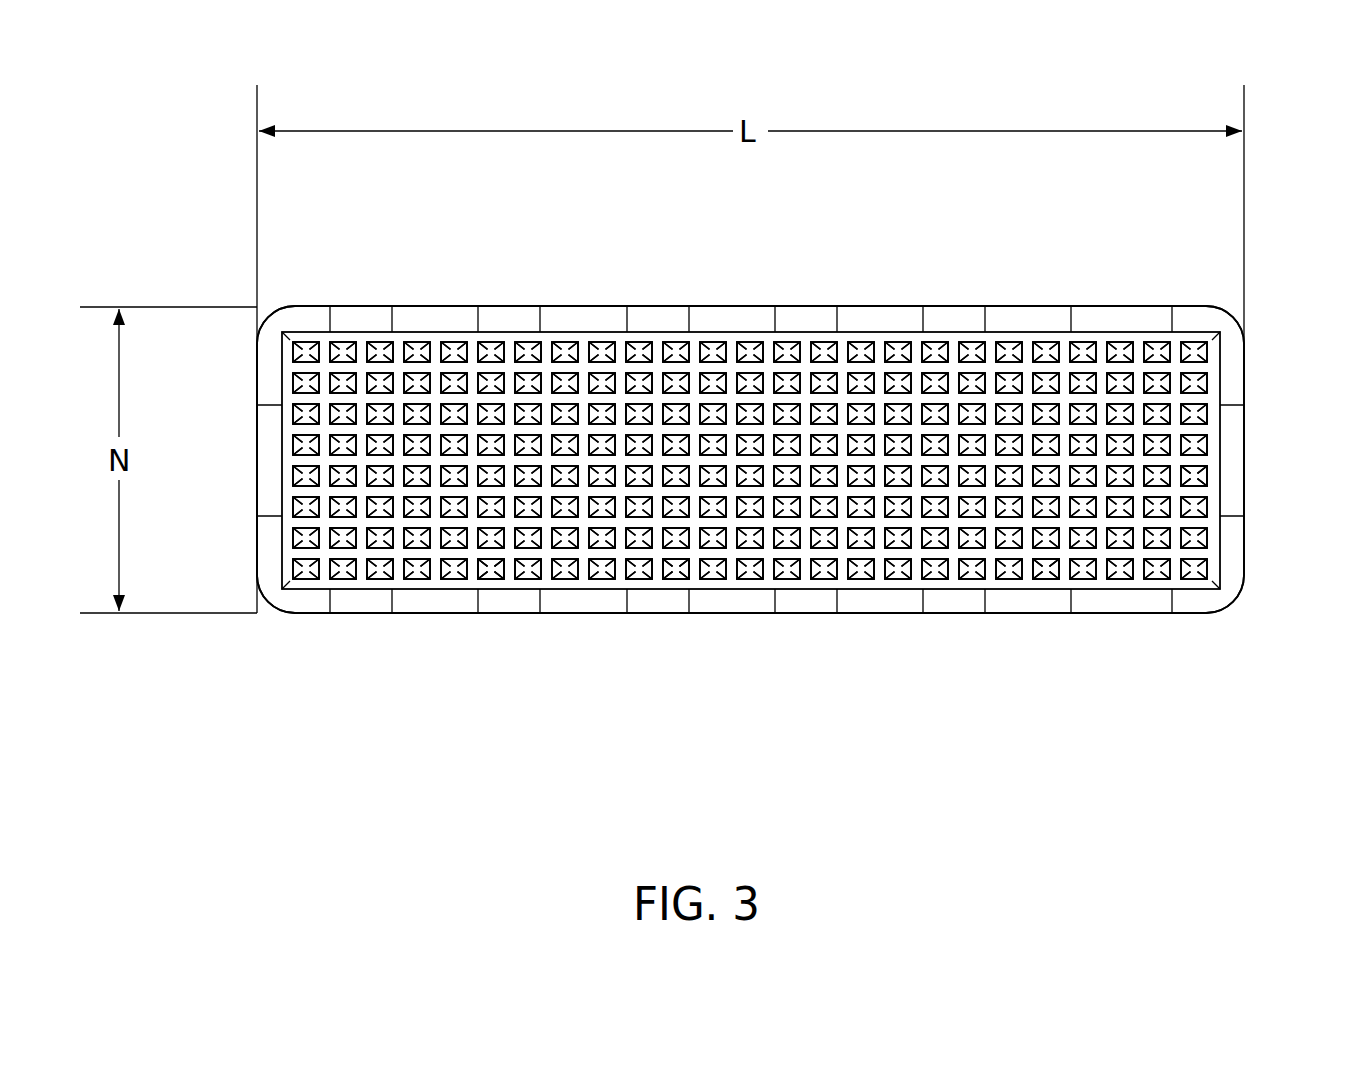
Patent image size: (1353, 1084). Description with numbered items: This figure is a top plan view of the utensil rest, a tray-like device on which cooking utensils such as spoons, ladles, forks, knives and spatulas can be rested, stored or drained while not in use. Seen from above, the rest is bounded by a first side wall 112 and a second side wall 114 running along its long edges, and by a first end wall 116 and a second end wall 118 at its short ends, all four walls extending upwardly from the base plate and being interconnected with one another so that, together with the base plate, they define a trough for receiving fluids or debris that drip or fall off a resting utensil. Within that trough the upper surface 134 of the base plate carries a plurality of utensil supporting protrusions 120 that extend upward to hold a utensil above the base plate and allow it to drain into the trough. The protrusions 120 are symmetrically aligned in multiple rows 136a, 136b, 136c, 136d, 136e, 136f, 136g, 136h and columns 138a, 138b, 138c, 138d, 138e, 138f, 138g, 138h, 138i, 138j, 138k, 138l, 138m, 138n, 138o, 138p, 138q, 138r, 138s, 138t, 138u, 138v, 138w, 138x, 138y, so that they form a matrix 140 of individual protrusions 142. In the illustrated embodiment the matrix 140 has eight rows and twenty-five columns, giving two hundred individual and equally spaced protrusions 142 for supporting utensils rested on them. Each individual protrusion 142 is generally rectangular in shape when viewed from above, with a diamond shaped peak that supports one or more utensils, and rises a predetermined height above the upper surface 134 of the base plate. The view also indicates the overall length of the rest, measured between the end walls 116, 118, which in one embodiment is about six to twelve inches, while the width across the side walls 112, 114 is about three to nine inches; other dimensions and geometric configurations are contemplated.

The first side wall 112 is at (583, 617).
The second side wall 114 is at (573, 303).
The first end wall 116 is at (250, 511).
The second end wall 118 is at (1248, 542).
The utensil supporting protrusions 120 is at (505, 572).
The upper surface 134 is at (881, 582).
The row 136a is at (275, 569).
The row 136b is at (275, 538).
The row 136c is at (275, 507).
The row 136d is at (275, 476).
The row 136e is at (275, 445).
The row 136f is at (275, 414).
The row 136g is at (275, 383).
The row 136h is at (275, 352).
The column 138a is at (306, 330).
The column 138b is at (343, 330).
The column 138c is at (380, 330).
The column 138d is at (417, 330).
The column 138e is at (454, 330).
The column 138f is at (491, 330).
The column 138g is at (528, 330).
The column 138h is at (565, 330).
The column 138i is at (601, 330).
The column 138j is at (639, 330).
The column 138k is at (676, 330).
The column 138l is at (713, 330).
The column 138m is at (750, 330).
The column 138n is at (787, 330).
The column 138o is at (824, 330).
The column 138p is at (861, 330).
The column 138q is at (898, 330).
The column 138r is at (935, 330).
The column 138s is at (972, 330).
The column 138t is at (1009, 330).
The column 138u is at (1046, 330).
The column 138v is at (1083, 330).
The column 138w is at (1120, 330).
The column 138x is at (1157, 330).
The column 138y is at (1194, 330).
The matrix 140 is at (370, 660).
The individual protrusions 142 is at (676, 579).